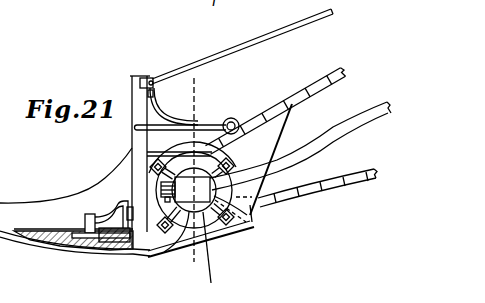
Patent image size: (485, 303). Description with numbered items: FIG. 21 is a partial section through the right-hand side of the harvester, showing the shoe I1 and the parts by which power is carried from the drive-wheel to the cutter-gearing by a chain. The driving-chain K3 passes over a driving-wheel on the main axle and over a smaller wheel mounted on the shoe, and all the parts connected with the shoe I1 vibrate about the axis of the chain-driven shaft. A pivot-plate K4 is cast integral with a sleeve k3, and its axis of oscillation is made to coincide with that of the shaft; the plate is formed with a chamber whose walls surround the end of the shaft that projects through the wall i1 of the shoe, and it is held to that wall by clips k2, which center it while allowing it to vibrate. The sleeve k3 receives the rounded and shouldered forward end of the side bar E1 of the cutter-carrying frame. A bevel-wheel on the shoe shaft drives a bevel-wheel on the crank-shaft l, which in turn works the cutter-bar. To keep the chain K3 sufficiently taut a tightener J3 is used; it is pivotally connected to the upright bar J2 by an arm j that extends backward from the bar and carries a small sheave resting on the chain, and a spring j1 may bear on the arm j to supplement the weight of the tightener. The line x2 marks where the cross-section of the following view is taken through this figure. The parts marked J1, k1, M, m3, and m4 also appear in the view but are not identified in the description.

The rod J' J1 is at (286, 30).
The upright bar J2 is at (131, 149).
The tightener J3 is at (239, 120).
The arm j is at (208, 125).
The spring j1 is at (173, 106).
The section line x2 is at (192, 177).
The chain K3 is at (368, 169).
The pivot-plate K4 is at (253, 264).
The side bar E1 is at (334, 139).
The wall of the shoe i1 is at (271, 159).
The rollers k' k1 is at (249, 209).
The clips k2 is at (208, 247).
The sleeve k3 is at (200, 185).
The shoe I1 is at (52, 194).
The hatched block M is at (54, 225).
The pipe m3 is at (97, 213).
The plate m4 is at (100, 235).
The crank-shaft l is at (120, 240).